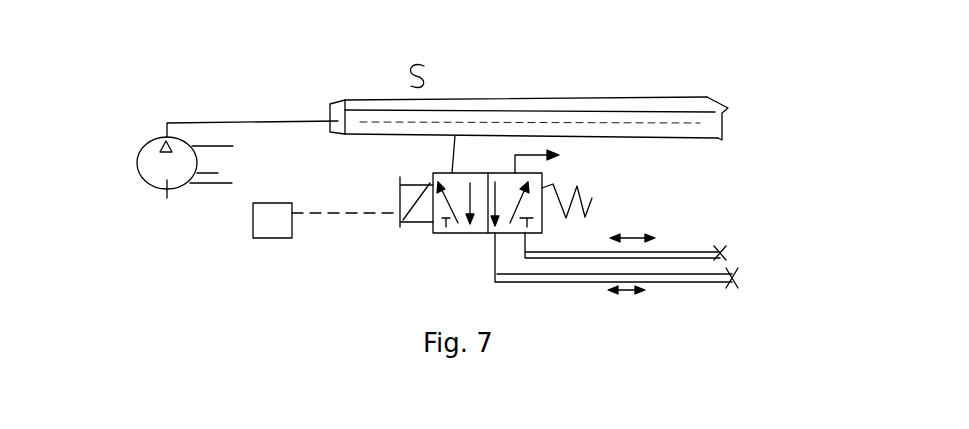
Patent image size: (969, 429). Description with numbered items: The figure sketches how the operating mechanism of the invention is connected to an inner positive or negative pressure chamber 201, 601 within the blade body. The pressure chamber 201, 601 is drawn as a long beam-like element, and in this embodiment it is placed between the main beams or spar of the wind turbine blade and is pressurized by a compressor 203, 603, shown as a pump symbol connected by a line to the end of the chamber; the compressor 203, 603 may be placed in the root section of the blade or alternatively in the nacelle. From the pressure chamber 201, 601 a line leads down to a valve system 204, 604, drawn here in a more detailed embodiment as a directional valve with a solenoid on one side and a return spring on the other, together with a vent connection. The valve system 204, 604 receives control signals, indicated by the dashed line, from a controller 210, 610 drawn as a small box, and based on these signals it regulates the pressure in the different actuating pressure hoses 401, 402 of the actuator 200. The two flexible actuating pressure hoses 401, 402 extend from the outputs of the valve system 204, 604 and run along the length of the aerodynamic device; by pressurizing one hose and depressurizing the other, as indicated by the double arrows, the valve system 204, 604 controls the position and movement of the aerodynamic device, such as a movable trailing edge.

The pressure chamber 201 is at (581, 119).
The pressure chamber 601 is at (700, 130).
The compressor 203 is at (220, 169).
The compressor 603 is at (220, 169).
The controller 210 is at (309, 232).
The controller 610 is at (309, 232).
The valve system 204 is at (563, 184).
The valve system 604 is at (553, 183).
The actuator 200 is at (662, 263).
The actuating pressure hose 401 is at (668, 242).
The actuating pressure hose 402 is at (662, 267).